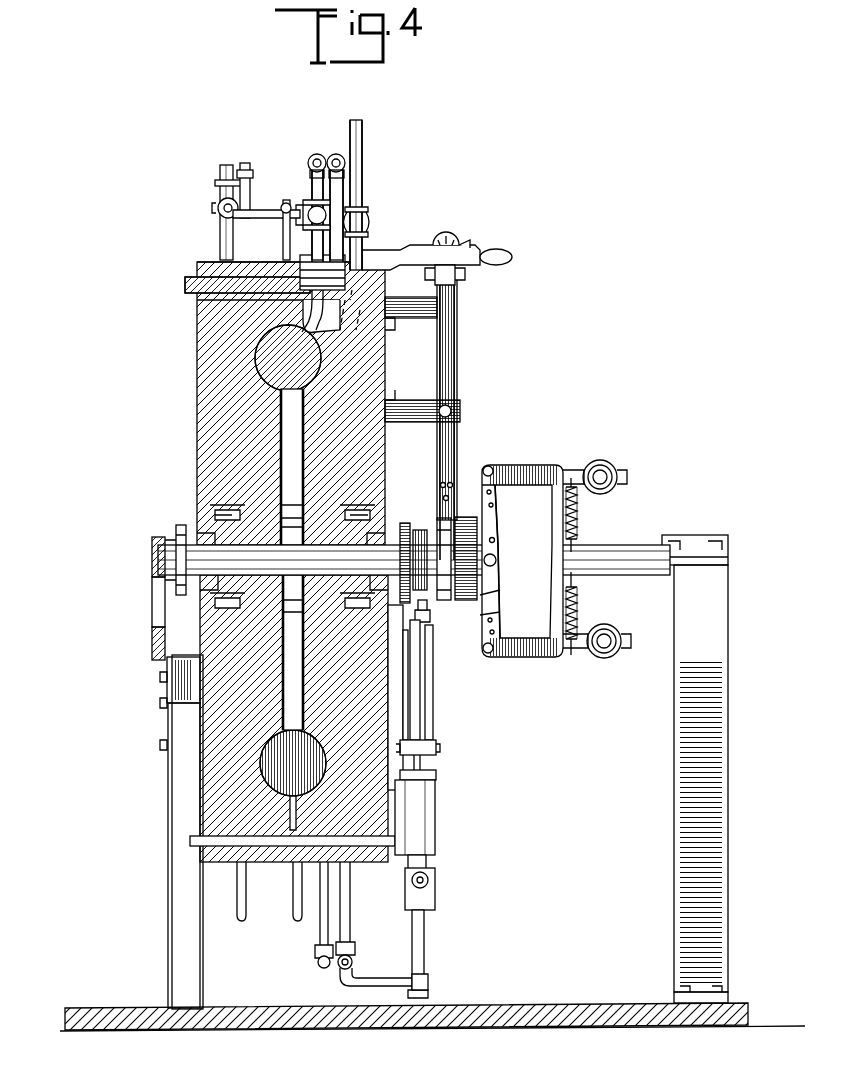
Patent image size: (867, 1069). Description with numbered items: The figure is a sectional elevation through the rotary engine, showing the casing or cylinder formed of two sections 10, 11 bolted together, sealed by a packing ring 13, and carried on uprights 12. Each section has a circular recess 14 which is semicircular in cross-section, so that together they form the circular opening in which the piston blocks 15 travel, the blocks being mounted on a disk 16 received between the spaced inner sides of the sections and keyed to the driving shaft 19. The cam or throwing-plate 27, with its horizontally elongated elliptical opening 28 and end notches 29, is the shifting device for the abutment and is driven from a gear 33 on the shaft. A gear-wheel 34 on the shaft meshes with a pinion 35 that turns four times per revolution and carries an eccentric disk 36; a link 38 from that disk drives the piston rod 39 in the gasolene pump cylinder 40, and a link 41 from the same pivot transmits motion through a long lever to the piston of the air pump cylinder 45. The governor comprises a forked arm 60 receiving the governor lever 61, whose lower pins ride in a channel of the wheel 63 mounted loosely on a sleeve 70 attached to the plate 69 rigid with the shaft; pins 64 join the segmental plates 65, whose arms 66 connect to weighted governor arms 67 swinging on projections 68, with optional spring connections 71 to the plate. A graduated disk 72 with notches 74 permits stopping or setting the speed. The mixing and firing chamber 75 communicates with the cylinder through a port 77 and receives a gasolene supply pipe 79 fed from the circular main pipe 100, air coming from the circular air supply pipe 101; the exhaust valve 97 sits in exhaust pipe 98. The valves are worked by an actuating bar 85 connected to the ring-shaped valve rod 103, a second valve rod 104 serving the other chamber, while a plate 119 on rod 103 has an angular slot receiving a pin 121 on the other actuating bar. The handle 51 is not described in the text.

The casing section 10 is at (420, 765).
The casing section 11 is at (197, 770).
The upright 12 is at (172, 922).
The packing ring 13 is at (272, 868).
The circular recess 14 is at (262, 777).
The piston block 15 is at (283, 357).
The disk 16 is at (283, 706).
The driving shaft 19 is at (620, 570).
The cam or throwing-plate 27 is at (152, 642).
The elliptical opening 28 is at (152, 613).
The notch 29 is at (152, 590).
The gear 33 is at (181, 525).
The gear-wheel 34 is at (405, 523).
The pinion 35 is at (446, 600).
The eccentric disk 36 is at (432, 640).
The link 38 is at (430, 708).
The piston rod 39 is at (436, 777).
The gasolene pump cylinder 40 is at (437, 838).
The link 41 is at (420, 727).
The air pump cylinder 45 is at (440, 902).
The handle 51 is at (470, 248).
The forked arm 60 is at (462, 282).
The governor lever 61 is at (457, 352).
The channeled wheel 63 is at (462, 517).
The pin 64 is at (498, 556).
The segmental plate 65 is at (500, 602).
The arm 66 is at (495, 618).
The governor arm 67 is at (585, 655).
The inward projection 68 is at (535, 657).
The disk or plate 69 is at (509, 561).
The sleeve 70 is at (525, 578).
The spring connection 71 is at (580, 512).
The graduated disk 72 is at (444, 236).
The notch 74 is at (465, 240).
The mixing and firing chamber 75 is at (300, 255).
The port 77 is at (320, 330).
The gasolene supply pipe 79 is at (312, 190).
The actuating bar 85 is at (245, 163).
The valve 97 is at (362, 184).
The exhaust pipe 98 is at (362, 134).
The main pipe 100 is at (315, 154).
The air supply pipe 101 is at (337, 154).
The valve rod 103 is at (220, 240).
The valve rod 104 is at (282, 200).
The plate 119 is at (215, 178).
The pin 121 is at (216, 200).